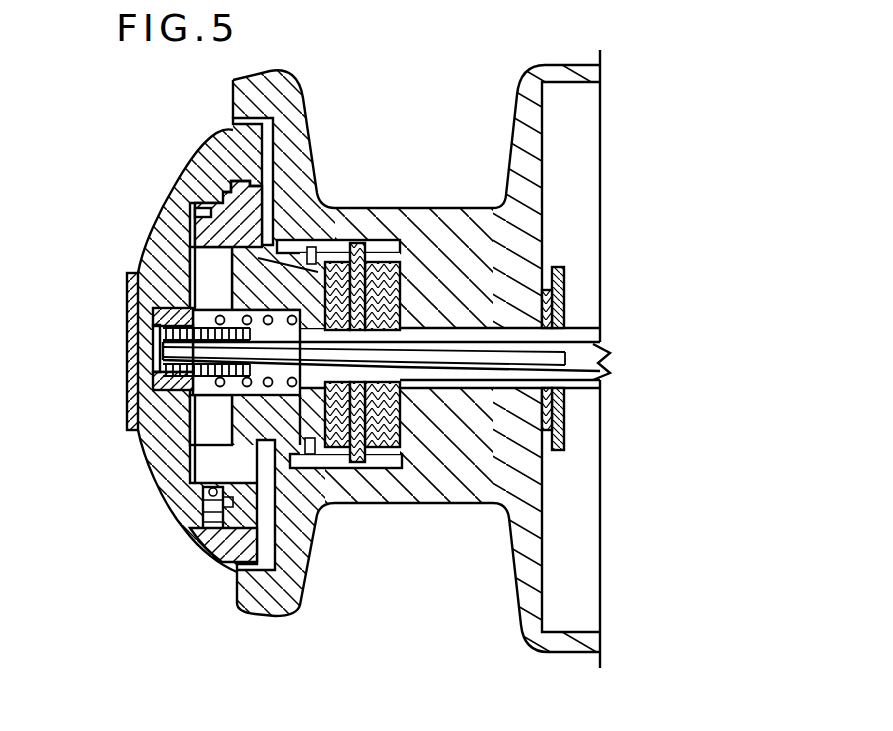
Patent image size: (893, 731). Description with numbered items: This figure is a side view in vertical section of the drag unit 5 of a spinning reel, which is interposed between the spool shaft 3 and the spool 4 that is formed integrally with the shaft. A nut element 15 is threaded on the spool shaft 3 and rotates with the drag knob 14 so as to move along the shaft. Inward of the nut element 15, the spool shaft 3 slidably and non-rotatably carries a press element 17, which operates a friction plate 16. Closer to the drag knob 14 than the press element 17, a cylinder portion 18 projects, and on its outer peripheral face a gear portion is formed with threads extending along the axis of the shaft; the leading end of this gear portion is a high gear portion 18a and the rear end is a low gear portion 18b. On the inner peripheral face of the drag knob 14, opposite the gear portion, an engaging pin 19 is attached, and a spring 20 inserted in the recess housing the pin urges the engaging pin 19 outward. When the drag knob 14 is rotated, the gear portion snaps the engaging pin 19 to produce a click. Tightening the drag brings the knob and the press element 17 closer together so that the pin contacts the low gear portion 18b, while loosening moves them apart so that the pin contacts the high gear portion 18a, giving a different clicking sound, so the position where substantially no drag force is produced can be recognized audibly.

The spool shaft 3 is at (580, 333).
The spool 4 is at (440, 208).
The drag unit 5 is at (323, 237).
The drag knob 14 is at (140, 233).
The nut element 15 is at (153, 463).
The friction plate 16 is at (384, 262).
The press element 17 is at (277, 270).
The cylinder portion 18 is at (161, 159).
The high gear portion 18a is at (188, 175).
The low gear portion 18b is at (208, 133).
The engaging pin 19 is at (203, 500).
The spring 20 is at (195, 548).